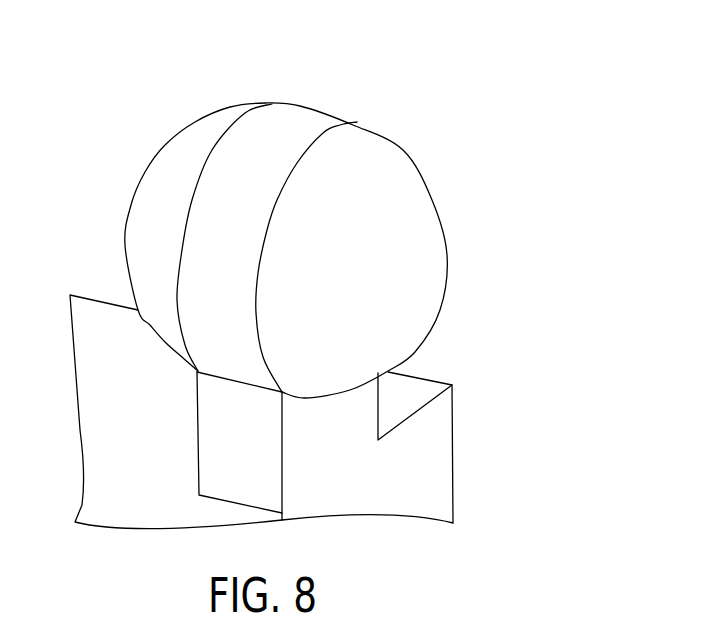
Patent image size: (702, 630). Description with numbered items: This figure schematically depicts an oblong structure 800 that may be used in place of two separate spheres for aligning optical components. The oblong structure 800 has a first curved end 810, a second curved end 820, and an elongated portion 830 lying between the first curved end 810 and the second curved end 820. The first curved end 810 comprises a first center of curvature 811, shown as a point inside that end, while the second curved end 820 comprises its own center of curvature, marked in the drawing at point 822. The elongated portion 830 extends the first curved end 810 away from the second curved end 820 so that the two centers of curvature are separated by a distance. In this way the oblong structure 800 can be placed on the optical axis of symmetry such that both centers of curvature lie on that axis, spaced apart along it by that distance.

The packaging assembly 800 is at (527, 113).
The box / container 810 is at (128, 215).
The first portion of ball surface 811 is at (160, 212).
The ball 820 is at (448, 258).
The second portion of ball surface 822 is at (338, 253).
The band / seam 830 is at (297, 128).